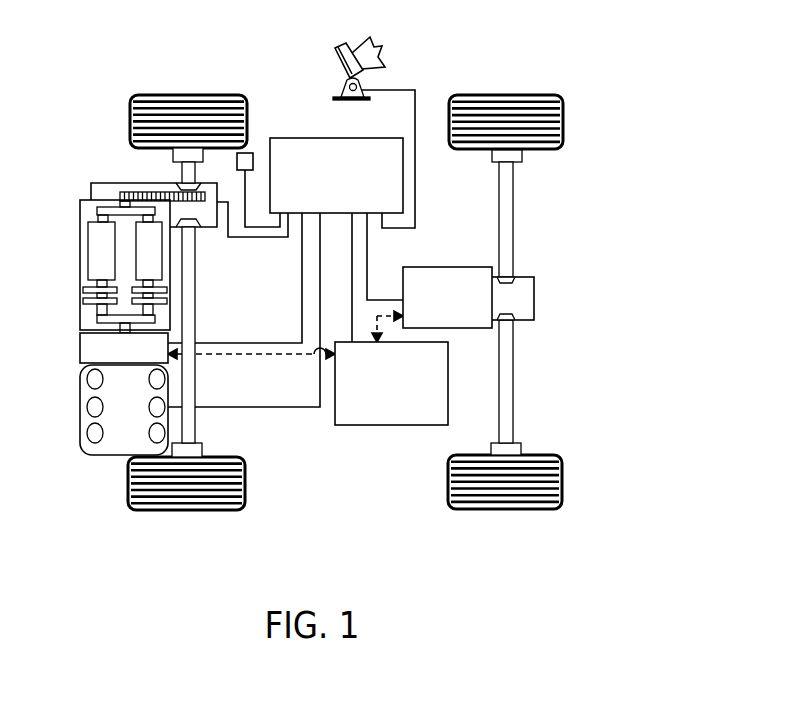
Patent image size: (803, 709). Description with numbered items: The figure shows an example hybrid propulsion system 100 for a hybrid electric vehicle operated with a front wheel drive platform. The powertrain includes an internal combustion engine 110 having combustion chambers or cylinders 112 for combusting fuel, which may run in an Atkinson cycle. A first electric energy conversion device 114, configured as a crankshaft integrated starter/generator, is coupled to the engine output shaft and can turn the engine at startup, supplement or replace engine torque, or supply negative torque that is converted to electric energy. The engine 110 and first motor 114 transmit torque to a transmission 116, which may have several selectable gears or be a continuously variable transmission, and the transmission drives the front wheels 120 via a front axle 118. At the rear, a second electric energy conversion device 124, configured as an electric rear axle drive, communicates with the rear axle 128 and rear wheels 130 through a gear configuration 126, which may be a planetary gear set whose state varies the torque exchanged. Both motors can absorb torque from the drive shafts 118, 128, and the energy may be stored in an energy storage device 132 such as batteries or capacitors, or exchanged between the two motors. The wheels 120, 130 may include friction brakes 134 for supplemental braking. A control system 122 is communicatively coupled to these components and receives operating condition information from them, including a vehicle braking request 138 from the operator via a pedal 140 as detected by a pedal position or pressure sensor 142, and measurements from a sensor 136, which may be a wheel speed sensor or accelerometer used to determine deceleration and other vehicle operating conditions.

The hybrid propulsion system 100 is at (617, 63).
The internal combustion engine 110 is at (80, 430).
The cylinders 112 is at (82, 398).
The first electric energy conversion device 114 is at (80, 345).
The transmission 116 is at (80, 270).
The front axle 118 is at (182, 180).
The front wheels 120 is at (195, 95).
The control system 122 is at (298, 137).
The second electric energy conversion device 124 is at (452, 266).
The gear configuration 126 is at (534, 292).
The rear axle 128 is at (513, 215).
The rear wheels 130 is at (504, 95).
The energy storage device 132 is at (395, 425).
The friction brakes 134 is at (522, 156).
The sensor 136 is at (243, 153).
The vehicle braking request 138 is at (384, 47).
The pedal 140 is at (336, 62).
The pedal position or pressure sensor 142 is at (343, 88).